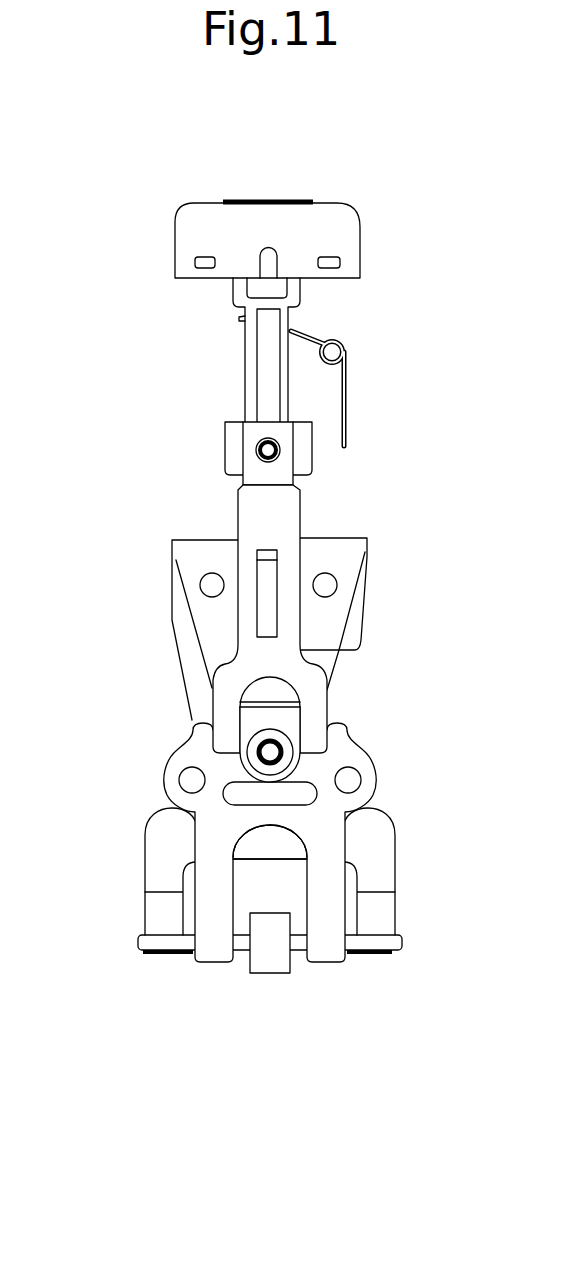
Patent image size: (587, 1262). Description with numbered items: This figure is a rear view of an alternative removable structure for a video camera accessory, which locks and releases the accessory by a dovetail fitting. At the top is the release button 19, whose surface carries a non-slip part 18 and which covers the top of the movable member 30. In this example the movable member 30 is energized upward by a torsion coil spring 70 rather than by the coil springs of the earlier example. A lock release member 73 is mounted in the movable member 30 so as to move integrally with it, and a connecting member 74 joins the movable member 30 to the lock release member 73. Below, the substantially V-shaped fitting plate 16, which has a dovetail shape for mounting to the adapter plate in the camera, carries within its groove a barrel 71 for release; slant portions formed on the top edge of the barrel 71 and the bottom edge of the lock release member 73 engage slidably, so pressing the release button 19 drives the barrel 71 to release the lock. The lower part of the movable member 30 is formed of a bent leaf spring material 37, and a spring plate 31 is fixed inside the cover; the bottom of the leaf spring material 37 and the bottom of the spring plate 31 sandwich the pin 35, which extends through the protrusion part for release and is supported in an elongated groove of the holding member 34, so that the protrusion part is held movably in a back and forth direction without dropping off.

The release button 19 is at (327, 230).
The non-slip part 18 is at (197, 258).
The movable member 30 is at (250, 373).
The torsion coil spring 70 is at (345, 415).
The connecting member 74 is at (302, 460).
The fitting plate 16 is at (177, 607).
The lock release member 73 is at (268, 582).
The barrel for release 71 is at (270, 625).
The spring plate 31 is at (355, 768).
The leaf spring material 37 is at (373, 923).
The pin 35 is at (383, 943).
The holding member 34 is at (277, 962).